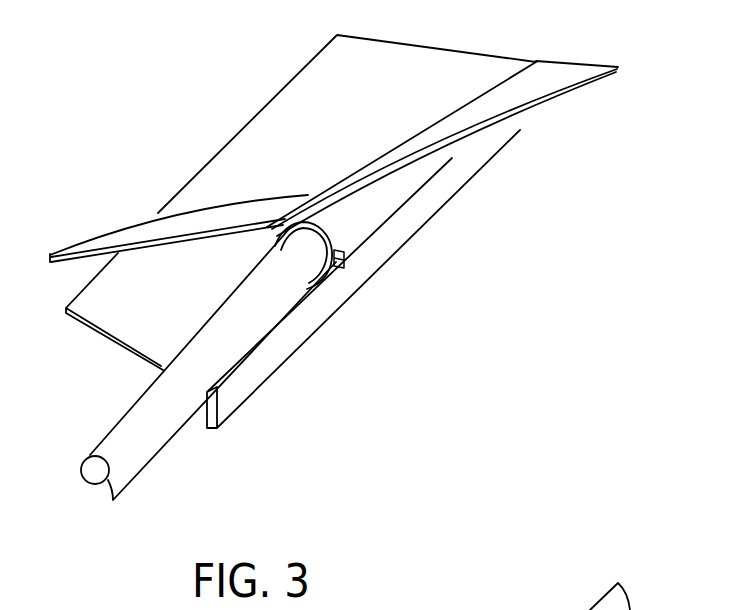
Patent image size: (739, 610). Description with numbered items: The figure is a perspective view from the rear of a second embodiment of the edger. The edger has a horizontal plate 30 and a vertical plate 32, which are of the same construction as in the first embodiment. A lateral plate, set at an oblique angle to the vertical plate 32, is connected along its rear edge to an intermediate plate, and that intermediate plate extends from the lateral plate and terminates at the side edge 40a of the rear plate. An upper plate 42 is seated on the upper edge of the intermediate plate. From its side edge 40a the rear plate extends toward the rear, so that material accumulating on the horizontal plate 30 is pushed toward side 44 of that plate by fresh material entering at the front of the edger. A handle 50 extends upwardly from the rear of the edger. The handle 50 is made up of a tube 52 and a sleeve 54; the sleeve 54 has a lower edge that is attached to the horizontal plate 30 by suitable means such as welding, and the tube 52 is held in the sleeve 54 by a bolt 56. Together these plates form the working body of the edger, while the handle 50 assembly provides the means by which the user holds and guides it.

The horizontal plate 30 is at (292, 115).
The vertical plate 32 is at (443, 185).
The side edge of rear plate 40a is at (288, 215).
The upper plate 42 is at (538, 85).
The side of the plate 44 is at (187, 183).
The handle 50 is at (148, 466).
The tube 52 is at (212, 313).
The sleeve 54 is at (328, 226).
The bolt 56 is at (345, 264).